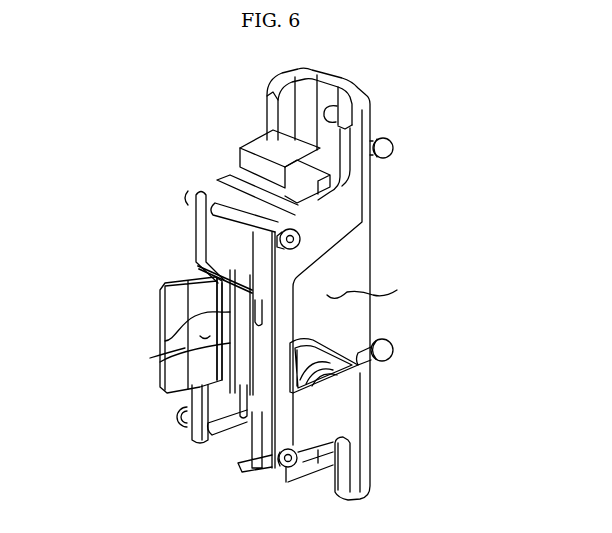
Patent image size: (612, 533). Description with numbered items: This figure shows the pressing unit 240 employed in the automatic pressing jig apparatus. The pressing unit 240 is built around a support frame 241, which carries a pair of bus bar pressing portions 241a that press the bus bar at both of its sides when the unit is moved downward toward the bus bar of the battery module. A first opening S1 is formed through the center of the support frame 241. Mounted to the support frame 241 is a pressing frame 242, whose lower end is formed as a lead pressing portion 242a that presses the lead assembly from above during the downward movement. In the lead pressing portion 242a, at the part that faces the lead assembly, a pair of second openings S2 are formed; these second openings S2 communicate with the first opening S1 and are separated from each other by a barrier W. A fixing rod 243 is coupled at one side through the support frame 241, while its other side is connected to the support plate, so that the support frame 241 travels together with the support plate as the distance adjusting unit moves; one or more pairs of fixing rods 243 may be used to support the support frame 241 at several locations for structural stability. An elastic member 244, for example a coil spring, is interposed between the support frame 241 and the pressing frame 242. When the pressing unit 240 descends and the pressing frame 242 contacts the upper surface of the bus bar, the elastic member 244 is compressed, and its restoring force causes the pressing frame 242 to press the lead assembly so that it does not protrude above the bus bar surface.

The pressing unit 240 is at (158, 126).
The support frame 241 is at (368, 213).
The bus bar pressing portion 241a is at (158, 311).
The pressing frame 242 is at (257, 147).
The lead pressing portion 242a is at (210, 284).
The fixing rod 243 is at (394, 147).
The elastic member 244 is at (337, 358).
The first opening S1 is at (374, 292).
The second opening S2 is at (160, 362).
The barrier W is at (165, 341).